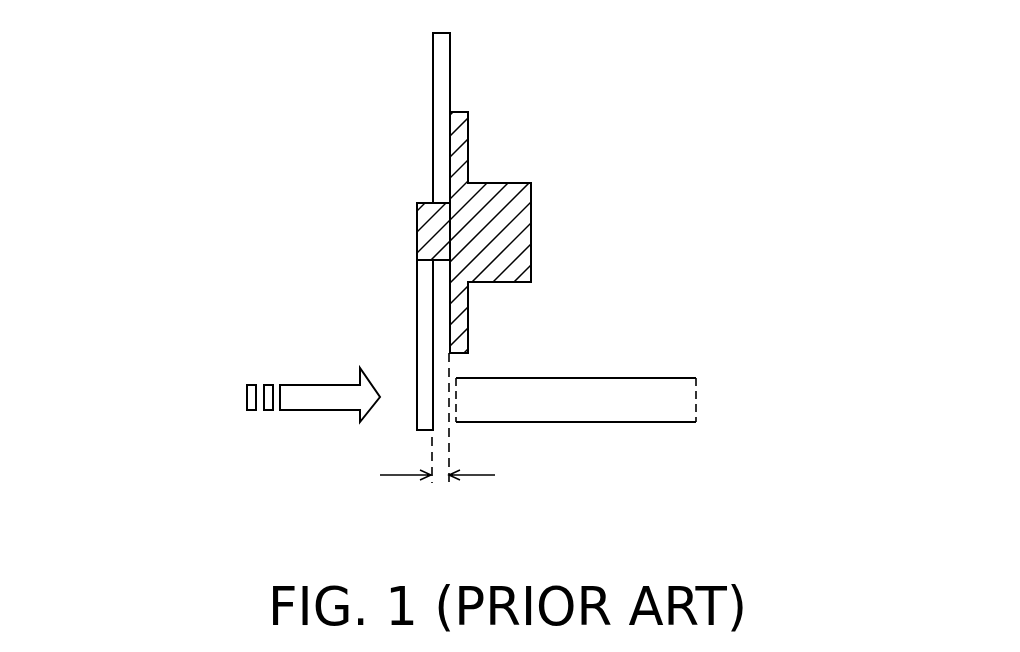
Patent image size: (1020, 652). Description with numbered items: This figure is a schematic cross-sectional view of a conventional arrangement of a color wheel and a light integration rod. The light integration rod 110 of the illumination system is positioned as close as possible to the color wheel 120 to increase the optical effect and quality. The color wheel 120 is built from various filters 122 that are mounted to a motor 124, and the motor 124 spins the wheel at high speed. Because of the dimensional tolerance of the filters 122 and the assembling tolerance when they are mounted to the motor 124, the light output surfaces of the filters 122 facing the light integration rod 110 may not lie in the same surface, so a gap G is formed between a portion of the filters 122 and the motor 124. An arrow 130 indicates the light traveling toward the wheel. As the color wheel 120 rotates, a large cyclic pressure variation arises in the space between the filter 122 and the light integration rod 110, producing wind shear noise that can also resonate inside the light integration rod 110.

The light integration rod 110 is at (682, 398).
The color wheel 120 is at (512, 138).
The filters 122 is at (441, 53).
The motor 124 is at (521, 225).
The light / gas flow 130 is at (313, 400).
The gap G is at (437, 494).